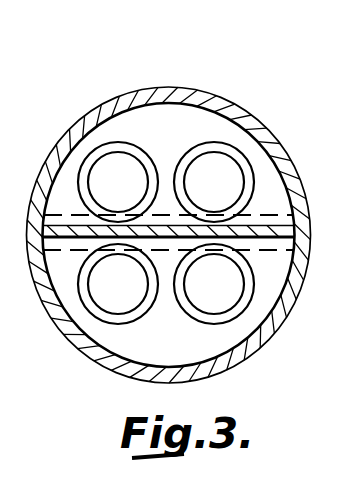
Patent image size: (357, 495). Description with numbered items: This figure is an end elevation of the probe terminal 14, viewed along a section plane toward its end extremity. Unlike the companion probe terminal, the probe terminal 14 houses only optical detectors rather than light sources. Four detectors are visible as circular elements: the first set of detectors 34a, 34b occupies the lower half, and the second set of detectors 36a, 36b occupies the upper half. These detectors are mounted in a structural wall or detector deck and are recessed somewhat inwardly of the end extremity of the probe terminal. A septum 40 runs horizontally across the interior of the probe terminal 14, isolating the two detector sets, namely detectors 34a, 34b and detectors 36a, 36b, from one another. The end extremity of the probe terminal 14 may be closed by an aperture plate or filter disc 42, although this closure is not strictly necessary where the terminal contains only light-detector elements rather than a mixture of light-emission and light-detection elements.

The probe terminal 14 is at (180, 82).
The aperture plate or filter disc 42 is at (207, 335).
The septum 40 is at (296, 214).
The detector 36a is at (100, 153).
The detector 36b is at (236, 150).
The detector 34a is at (88, 312).
The detector 34b is at (248, 305).